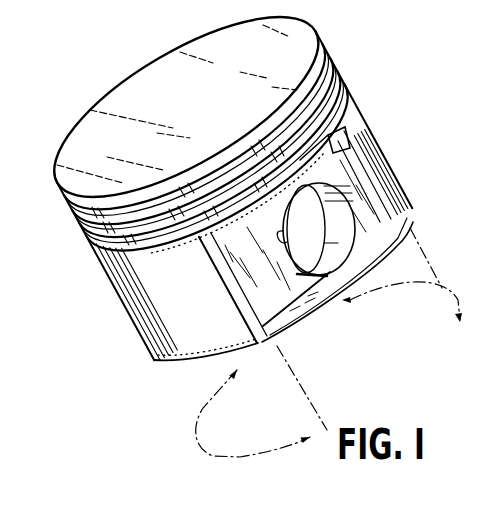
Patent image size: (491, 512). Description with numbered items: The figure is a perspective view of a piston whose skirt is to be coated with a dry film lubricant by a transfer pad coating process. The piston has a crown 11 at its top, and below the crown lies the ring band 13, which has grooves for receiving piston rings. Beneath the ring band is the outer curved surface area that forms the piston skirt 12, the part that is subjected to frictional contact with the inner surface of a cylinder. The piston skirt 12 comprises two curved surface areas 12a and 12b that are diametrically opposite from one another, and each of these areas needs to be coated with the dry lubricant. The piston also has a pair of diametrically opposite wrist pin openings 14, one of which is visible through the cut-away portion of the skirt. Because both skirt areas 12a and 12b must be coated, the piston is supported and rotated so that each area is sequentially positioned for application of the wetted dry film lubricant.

The crown 11 is at (293, 55).
The piston skirt 12 is at (405, 172).
The curved surface area 12a is at (169, 358).
The curved surface area 12b is at (375, 149).
The ring band 13 is at (344, 67).
The wrist pin opening 14 is at (320, 257).